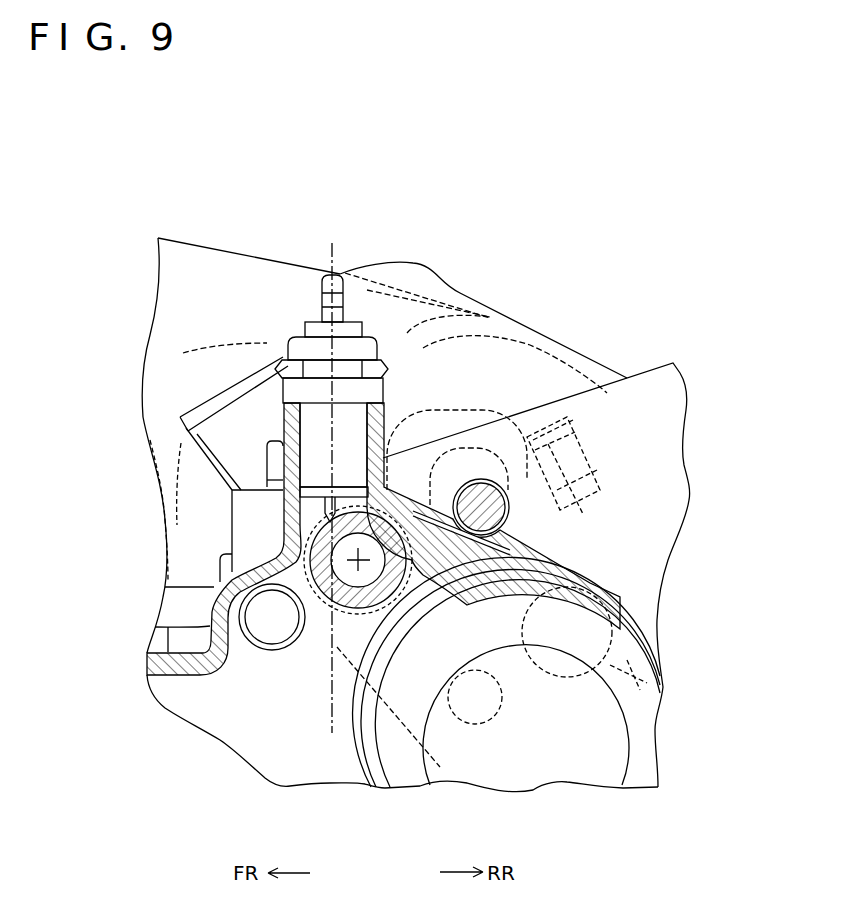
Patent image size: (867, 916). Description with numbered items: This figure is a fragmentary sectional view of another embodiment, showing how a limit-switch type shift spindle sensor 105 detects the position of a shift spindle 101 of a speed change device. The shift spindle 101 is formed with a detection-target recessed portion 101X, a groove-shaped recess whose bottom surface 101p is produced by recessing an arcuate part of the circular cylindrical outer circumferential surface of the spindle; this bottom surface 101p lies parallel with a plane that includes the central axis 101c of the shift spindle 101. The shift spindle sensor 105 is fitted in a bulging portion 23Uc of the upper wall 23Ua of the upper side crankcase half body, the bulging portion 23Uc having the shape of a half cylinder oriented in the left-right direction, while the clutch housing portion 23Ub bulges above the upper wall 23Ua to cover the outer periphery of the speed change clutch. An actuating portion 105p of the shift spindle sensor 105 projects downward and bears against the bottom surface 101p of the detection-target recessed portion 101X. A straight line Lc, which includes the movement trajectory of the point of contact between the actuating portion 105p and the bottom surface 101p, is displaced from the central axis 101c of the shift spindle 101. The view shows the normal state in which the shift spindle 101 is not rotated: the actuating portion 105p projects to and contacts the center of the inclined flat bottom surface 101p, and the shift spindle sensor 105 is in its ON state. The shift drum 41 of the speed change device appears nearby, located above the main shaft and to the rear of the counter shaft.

The upper wall 23Ua is at (158, 618).
The clutch housing portion 23Ub is at (195, 248).
The bulging portion 23Uc is at (483, 418).
The shift drum 41 is at (370, 758).
The shift spindle 101 is at (310, 636).
The central axis 101c is at (313, 620).
The bottom surface 101p is at (320, 516).
The detection-target recessed portion 101X is at (267, 481).
The shift spindle sensor 105 is at (370, 391).
The actuating portion 105p is at (383, 421).
The straight line Lc is at (328, 250).